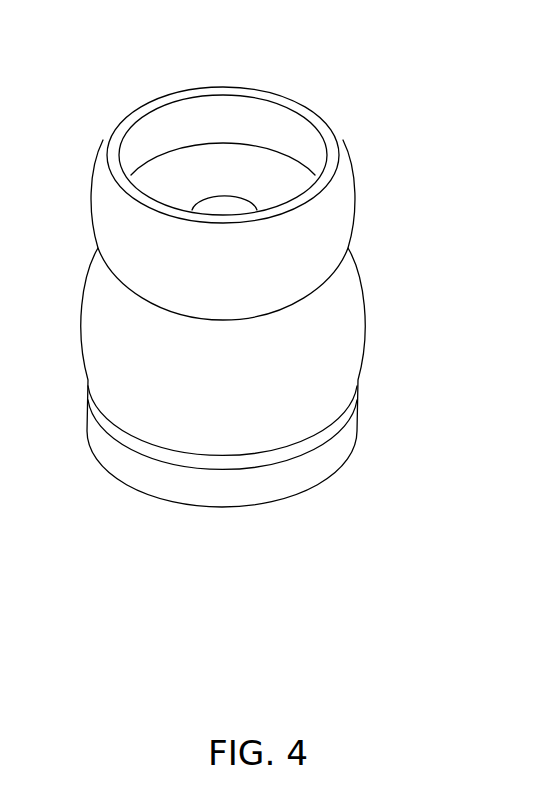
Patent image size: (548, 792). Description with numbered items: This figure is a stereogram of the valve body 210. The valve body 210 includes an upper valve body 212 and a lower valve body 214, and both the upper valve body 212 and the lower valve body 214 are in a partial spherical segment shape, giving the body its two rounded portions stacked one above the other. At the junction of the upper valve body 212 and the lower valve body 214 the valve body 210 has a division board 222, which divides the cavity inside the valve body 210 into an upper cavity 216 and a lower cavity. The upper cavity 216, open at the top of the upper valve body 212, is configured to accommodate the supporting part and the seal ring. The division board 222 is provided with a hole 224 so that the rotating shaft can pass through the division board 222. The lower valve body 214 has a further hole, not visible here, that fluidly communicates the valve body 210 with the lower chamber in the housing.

The valve body 210 is at (82, 95).
The upper valve body 212 is at (337, 147).
The lower valve body 214 is at (350, 295).
The upper cavity 216 is at (262, 108).
The division board 222 is at (295, 182).
The hole 224 is at (202, 208).